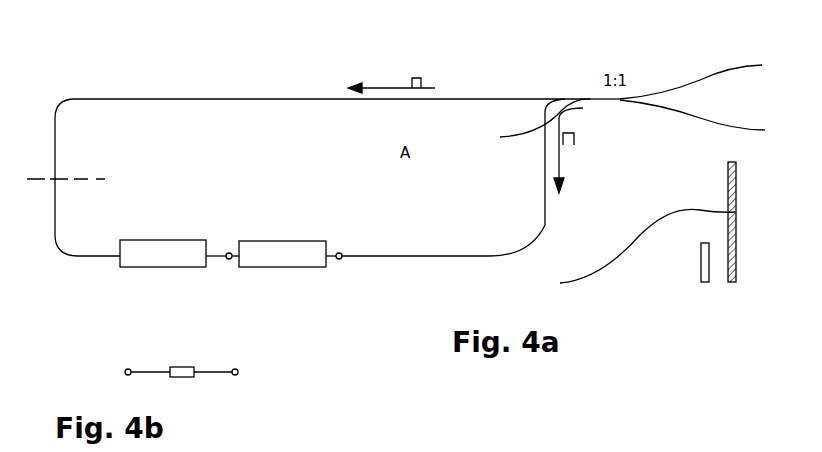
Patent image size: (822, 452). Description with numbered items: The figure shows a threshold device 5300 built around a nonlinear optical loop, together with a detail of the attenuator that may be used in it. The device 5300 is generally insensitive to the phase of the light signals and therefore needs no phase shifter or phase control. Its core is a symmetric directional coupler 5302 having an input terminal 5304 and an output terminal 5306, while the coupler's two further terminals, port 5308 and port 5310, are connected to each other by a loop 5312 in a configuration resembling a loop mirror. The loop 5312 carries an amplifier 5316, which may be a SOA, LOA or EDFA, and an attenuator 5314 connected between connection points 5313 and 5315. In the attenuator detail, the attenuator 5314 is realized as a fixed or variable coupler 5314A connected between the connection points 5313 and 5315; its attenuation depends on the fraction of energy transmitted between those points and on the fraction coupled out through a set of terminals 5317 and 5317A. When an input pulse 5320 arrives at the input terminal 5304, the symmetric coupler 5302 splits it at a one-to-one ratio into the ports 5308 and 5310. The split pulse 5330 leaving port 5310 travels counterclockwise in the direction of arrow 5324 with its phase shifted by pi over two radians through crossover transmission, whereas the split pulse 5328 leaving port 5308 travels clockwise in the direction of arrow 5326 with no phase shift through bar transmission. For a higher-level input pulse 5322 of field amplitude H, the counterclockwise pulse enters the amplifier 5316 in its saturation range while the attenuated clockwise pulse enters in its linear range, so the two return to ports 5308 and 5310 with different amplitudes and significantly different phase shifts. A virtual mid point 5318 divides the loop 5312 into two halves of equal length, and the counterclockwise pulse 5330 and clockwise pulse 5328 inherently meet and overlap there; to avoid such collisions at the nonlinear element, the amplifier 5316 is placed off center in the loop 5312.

In FIG. 4A, the threshold device 5300 is at (110, 85).
In FIG. 4A, the symmetric directional coupler 5302 is at (617, 104).
In FIG. 4A, the input terminal 5304 is at (690, 132).
In FIG. 4A, the output terminal 5306 is at (718, 68).
In FIG. 4A, the coupler terminal (port) 5308 is at (520, 122).
In FIG. 4A, the coupler terminal (port) 5310 is at (577, 99).
In FIG. 4A, the loop 5312 is at (547, 208).
In FIG. 4A, the connection point 5313 is at (339, 253).
In FIG. 4B, the connection point 5313 is at (236, 369).
In FIG. 4A, the attenuator 5314 is at (310, 267).
In FIG. 4B, the attenuator 5314 is at (198, 363).
In FIG. 4B, the fixed or variable coupler 5314A is at (175, 378).
In FIG. 4A, the connection point 5315 is at (230, 253).
In FIG. 4B, the connection point 5315 is at (162, 358).
In FIG. 4A, the amplifier 5316 is at (183, 267).
In FIG. 4B, the terminal 5317 is at (148, 375).
In FIG. 4B, the terminal 5317A is at (220, 378).
In FIG. 4A, the virtual mid point 5318 is at (65, 180).
In FIG. 4A, the input pulse 5320 is at (700, 250).
In FIG. 4A, the higher-level input pulse 5322 is at (623, 248).
In FIG. 4A, the arrow (counterclockwise direction) 5324 is at (397, 87).
In FIG. 4A, the arrow (clockwise direction) 5326 is at (561, 160).
In FIG. 4A, the split pulse (clockwise) 5328 is at (576, 138).
In FIG. 4A, the split pulse (counterclockwise) 5330 is at (410, 80).